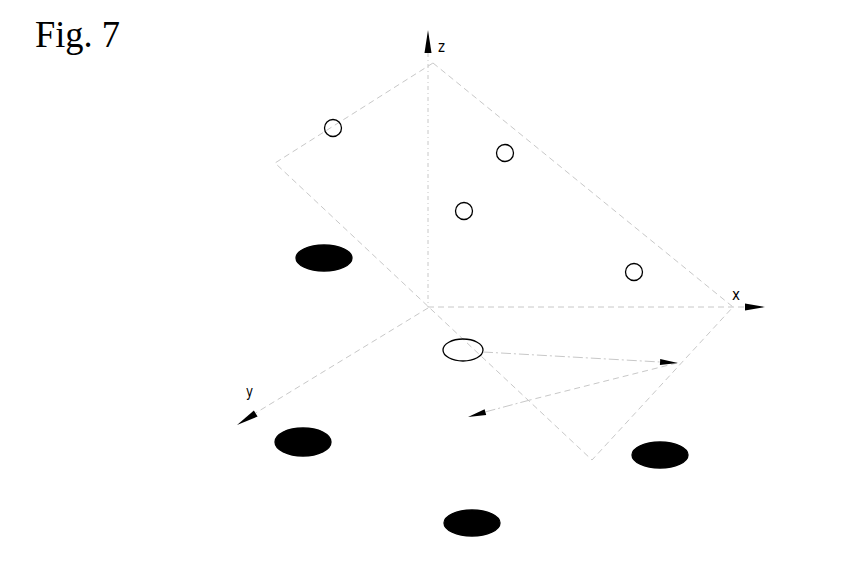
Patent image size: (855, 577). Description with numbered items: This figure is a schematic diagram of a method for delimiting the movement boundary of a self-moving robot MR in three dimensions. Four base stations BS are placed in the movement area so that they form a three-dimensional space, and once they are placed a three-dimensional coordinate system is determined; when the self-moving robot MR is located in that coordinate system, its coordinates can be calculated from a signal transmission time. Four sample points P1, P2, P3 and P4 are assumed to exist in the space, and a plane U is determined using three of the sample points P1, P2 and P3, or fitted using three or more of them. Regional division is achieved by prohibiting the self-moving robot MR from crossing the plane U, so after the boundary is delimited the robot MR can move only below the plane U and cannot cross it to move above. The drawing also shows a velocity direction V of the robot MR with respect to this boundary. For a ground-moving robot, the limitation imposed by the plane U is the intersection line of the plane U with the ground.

The plane U is at (504, 261).
The sample point P1 is at (493, 143).
The sample point P2 is at (620, 261).
The sample point P3 is at (459, 229).
The sample point P4 is at (322, 116).
The self-moving robot MR is at (431, 324).
The velocity vector V is at (503, 408).
The base station BS is at (305, 269).